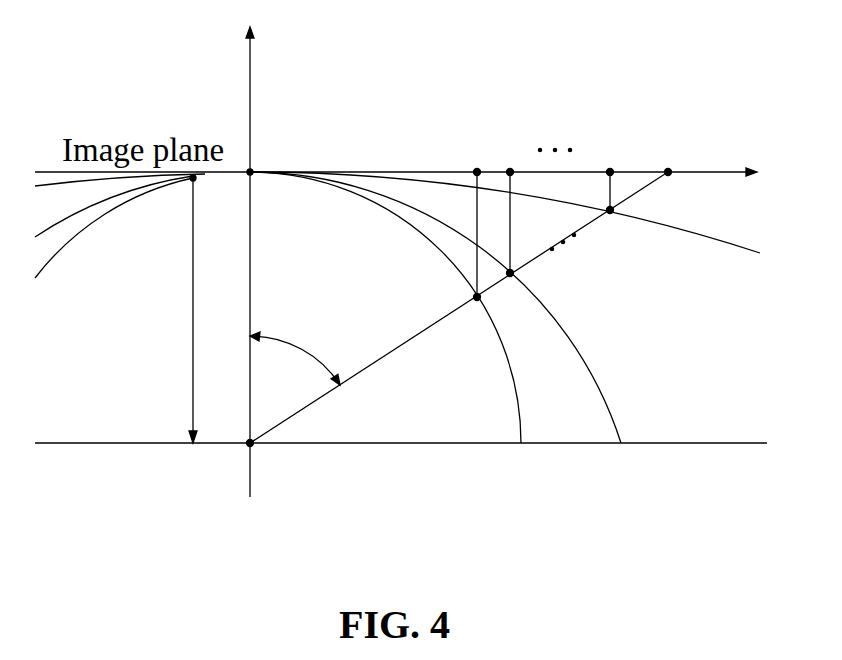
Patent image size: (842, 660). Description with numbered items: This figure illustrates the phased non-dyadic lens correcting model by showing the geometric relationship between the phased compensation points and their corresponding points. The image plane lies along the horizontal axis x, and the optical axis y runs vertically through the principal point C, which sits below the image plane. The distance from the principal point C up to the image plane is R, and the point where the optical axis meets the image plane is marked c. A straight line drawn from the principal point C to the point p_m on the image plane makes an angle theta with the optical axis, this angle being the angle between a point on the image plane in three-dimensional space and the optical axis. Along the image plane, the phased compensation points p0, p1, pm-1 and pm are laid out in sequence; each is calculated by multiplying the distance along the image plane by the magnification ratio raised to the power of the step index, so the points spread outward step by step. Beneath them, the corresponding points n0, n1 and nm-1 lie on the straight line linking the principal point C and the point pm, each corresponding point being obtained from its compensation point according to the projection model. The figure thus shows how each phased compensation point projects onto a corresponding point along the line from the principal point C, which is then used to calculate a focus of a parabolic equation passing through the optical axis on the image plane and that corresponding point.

The x axis x is at (398, 187).
The optical axis y is at (261, 251).
The distance up to image plane R is at (207, 310).
The principal point C is at (228, 464).
The point on image plane on optical axis c is at (259, 187).
The angle theta is at (295, 363).
The phased compensation point p0 is at (459, 211).
The phased compensation point p1 is at (505, 199).
The phased compensation point pm-1 is at (609, 168).
The phased compensation point pm is at (684, 151).
The corresponding point n0 is at (474, 315).
The corresponding point n1 is at (510, 292).
The corresponding point nm-1 is at (628, 229).